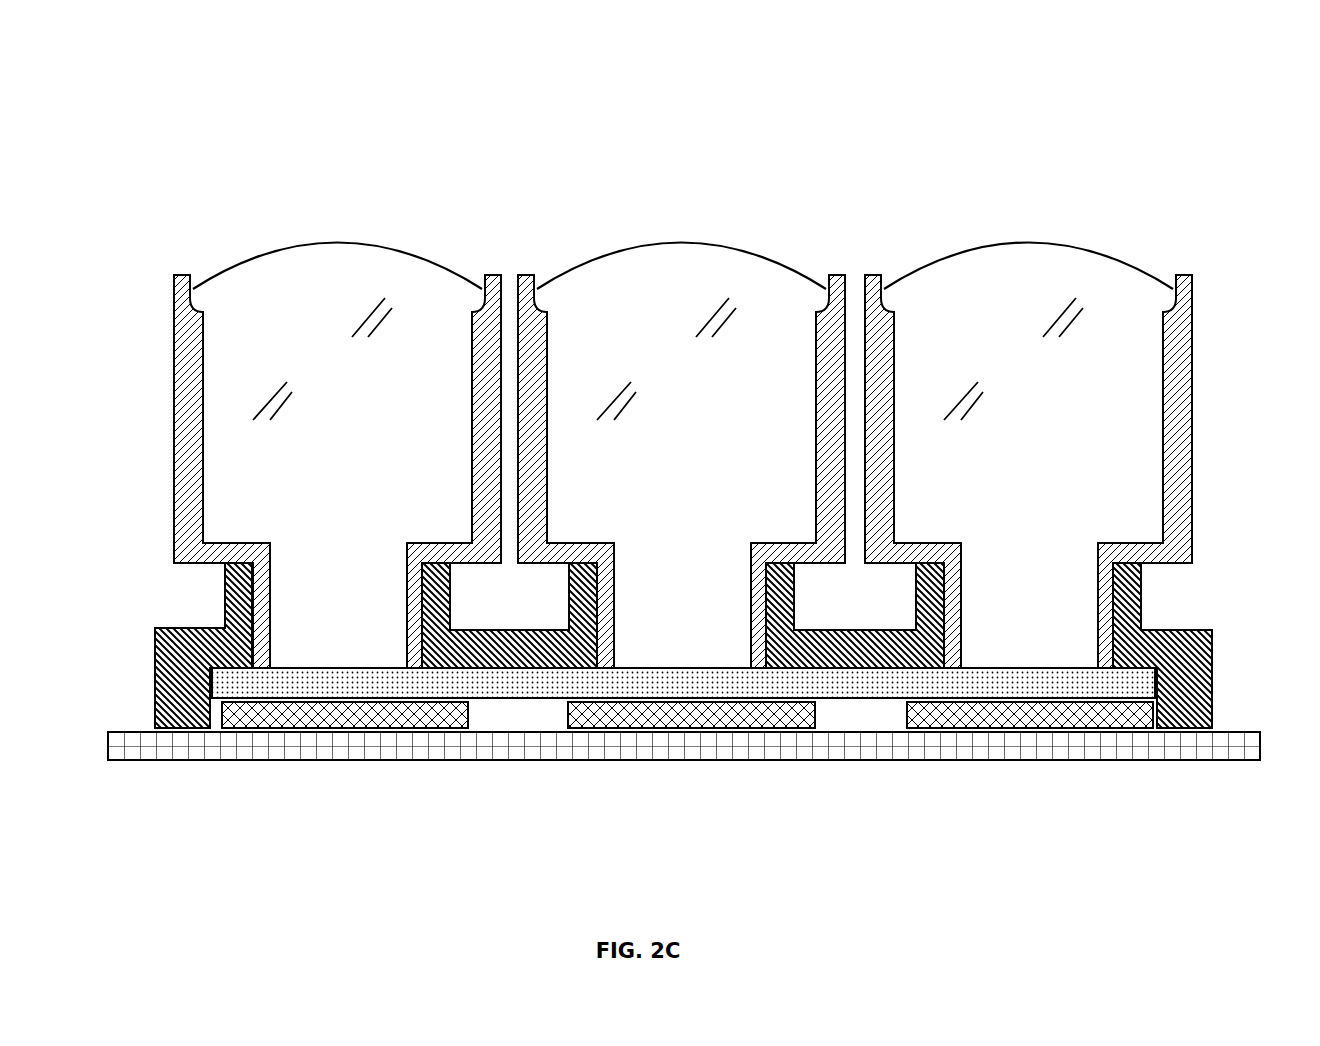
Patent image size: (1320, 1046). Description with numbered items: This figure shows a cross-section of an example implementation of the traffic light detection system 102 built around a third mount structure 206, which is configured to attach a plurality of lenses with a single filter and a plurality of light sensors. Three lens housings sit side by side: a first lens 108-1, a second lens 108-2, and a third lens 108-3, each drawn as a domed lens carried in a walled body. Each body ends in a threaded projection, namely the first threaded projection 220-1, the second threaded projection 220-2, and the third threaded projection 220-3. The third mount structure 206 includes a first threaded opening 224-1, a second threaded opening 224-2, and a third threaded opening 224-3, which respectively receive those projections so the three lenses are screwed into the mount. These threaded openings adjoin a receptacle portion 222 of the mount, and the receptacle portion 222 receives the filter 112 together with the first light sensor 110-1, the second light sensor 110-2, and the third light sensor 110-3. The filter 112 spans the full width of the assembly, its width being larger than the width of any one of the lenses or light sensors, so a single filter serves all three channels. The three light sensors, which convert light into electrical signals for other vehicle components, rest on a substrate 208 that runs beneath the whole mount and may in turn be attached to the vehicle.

The traffic light detection system 102 is at (364, 128).
The first lens 108-1 is at (462, 275).
The second lens 108-2 is at (802, 274).
The third lens 108-3 is at (1152, 277).
The first threaded projection 220-1 is at (407, 567).
The second threaded projection 220-2 is at (751, 567).
The third threaded projection 220-3 is at (1098, 567).
The first threaded opening 224-1 is at (420, 607).
The second threaded opening 224-2 is at (763, 607).
The third threaded opening 224-3 is at (1112, 607).
The third mount structure 206 is at (157, 650).
The filter 112 is at (212, 685).
The substrate 208 is at (1238, 731).
The receptacle portion 222 is at (513, 722).
The first light sensor 110-1 is at (273, 720).
The second light sensor 110-2 is at (663, 722).
The third light sensor 110-3 is at (1058, 722).